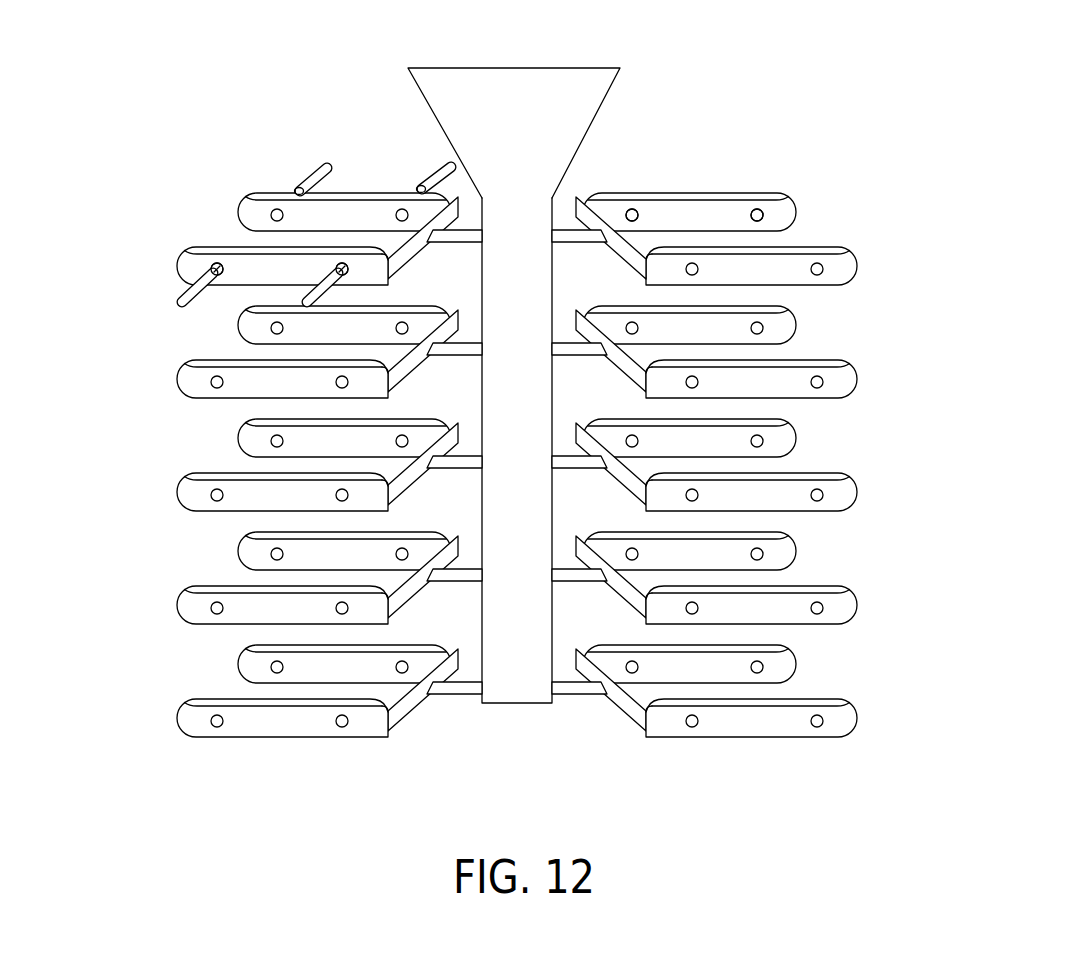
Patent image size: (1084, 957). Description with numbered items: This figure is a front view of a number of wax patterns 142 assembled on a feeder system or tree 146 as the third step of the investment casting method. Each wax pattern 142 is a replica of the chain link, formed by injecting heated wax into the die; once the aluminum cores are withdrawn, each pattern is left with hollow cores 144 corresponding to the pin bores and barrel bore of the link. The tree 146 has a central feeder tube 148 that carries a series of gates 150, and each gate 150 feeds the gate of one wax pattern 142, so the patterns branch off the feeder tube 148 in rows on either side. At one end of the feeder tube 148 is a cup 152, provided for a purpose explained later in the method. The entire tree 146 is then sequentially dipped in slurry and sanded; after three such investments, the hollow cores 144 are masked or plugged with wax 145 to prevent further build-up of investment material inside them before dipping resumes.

The wax pattern 142 is at (714, 194).
The hollow core 144 is at (638, 213).
The wax 145 is at (307, 177).
The feeder system or tree 146 is at (548, 382).
The feeder tube 148 is at (528, 645).
The gate 150 is at (578, 198).
The cup 152 is at (600, 107).